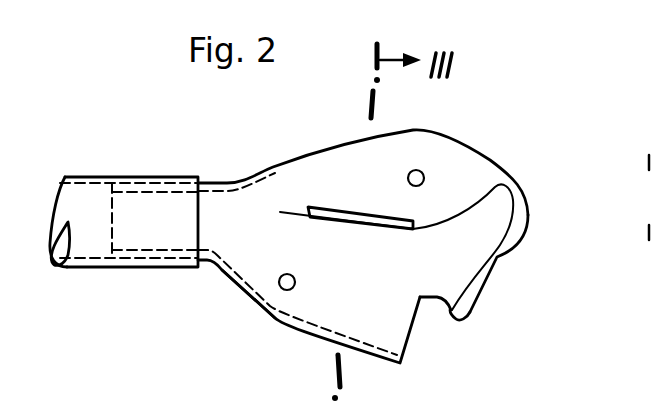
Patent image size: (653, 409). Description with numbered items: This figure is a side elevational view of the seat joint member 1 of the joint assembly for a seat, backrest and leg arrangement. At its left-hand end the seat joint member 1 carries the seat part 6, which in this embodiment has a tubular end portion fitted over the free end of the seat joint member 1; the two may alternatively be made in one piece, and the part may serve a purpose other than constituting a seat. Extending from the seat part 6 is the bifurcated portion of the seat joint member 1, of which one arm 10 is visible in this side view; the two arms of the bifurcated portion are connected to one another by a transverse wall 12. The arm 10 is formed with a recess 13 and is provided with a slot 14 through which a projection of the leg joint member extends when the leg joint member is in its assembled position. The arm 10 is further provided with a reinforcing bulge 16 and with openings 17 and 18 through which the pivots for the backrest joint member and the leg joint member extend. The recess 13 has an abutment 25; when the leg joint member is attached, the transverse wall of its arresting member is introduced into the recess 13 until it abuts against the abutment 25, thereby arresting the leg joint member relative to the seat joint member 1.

The seat joint member 1 is at (237, 258).
The seat part 6 is at (93, 186).
The arm 10 is at (353, 160).
The transverse wall 12 is at (327, 333).
The recess 13 is at (428, 306).
The slot 14 is at (320, 205).
The reinforcing bulge 16 is at (520, 215).
The opening 17 is at (420, 171).
The opening 18 is at (282, 291).
The abutment 25 is at (423, 295).